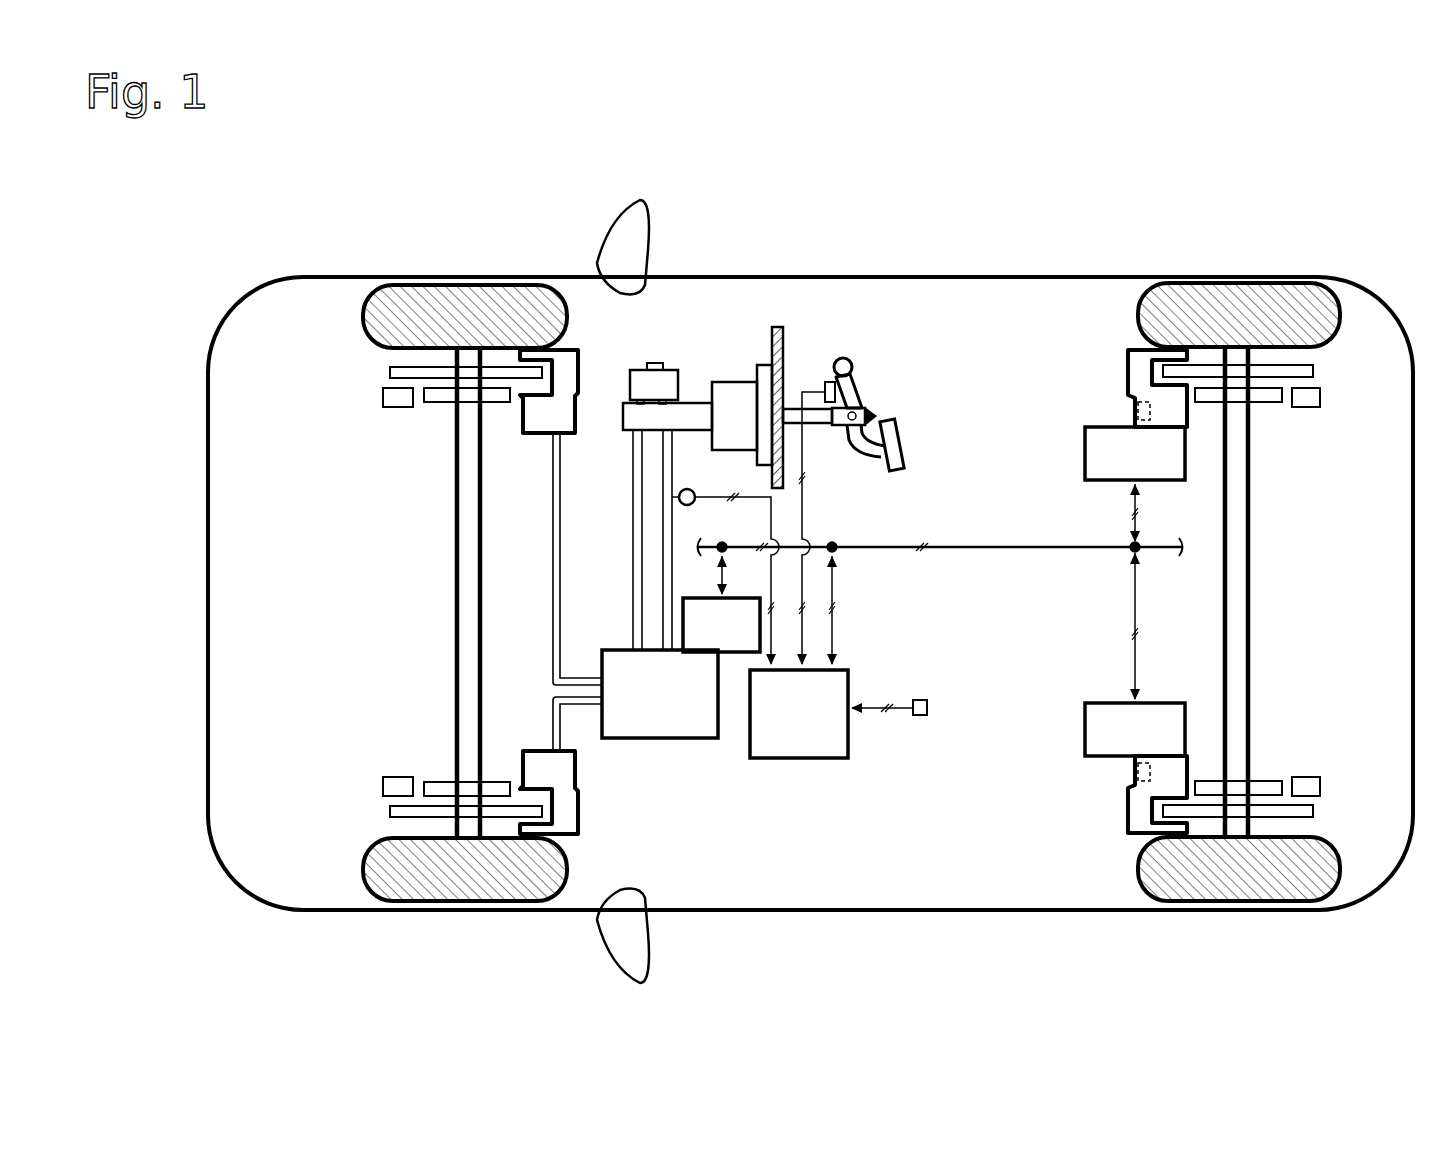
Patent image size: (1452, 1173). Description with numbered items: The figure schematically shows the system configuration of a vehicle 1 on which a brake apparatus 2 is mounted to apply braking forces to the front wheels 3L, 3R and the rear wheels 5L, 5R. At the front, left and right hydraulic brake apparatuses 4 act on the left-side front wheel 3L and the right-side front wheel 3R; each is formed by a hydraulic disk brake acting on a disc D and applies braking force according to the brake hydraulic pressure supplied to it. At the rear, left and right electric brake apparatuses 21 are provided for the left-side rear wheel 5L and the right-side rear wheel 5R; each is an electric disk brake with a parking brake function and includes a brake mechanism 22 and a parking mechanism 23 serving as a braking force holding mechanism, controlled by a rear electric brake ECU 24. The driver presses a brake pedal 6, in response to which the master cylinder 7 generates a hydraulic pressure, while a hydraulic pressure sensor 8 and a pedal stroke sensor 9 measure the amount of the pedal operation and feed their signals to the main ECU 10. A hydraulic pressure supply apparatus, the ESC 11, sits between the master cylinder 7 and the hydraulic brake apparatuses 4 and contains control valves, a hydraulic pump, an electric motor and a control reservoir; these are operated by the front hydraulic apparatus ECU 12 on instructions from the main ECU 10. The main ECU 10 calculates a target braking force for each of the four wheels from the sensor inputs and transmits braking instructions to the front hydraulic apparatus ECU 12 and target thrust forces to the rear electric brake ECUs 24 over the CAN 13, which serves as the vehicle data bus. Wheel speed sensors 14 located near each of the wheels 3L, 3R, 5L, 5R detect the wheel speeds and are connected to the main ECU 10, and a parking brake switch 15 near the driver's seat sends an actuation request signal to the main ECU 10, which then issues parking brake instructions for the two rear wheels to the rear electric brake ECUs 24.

The vehicle 1 is at (810, 567).
The brake apparatus 2 is at (1070, 320).
The right-side front wheel 3R is at (468, 312).
The left-side front wheel 3L is at (467, 883).
The right-side rear wheel 5R is at (1236, 312).
The left-side rear wheel 5L is at (1246, 883).
The hydraulic brake apparatus 4 is at (572, 378).
The brake pedal 6 is at (905, 446).
The master cylinder 7 is at (695, 410).
The hydraulic pressure sensor 8 is at (682, 491).
The pedal stroke sensor 9 is at (828, 382).
The main ECU 10 is at (812, 760).
The hydraulic pressure supply apparatus (ESC) 11 is at (665, 742).
The front hydraulic apparatus ECU 12 is at (727, 653).
The CAN 13 is at (962, 554).
The wheel speed sensor 14 is at (383, 397).
The parking brake switch 15 is at (919, 718).
The electric brake apparatus 21 is at (1098, 592).
The brake mechanism 22 is at (1140, 364).
The parking mechanism 23 is at (1135, 413).
The rear electric brake ECU 24 is at (1085, 456).
The brake disc D is at (390, 372).